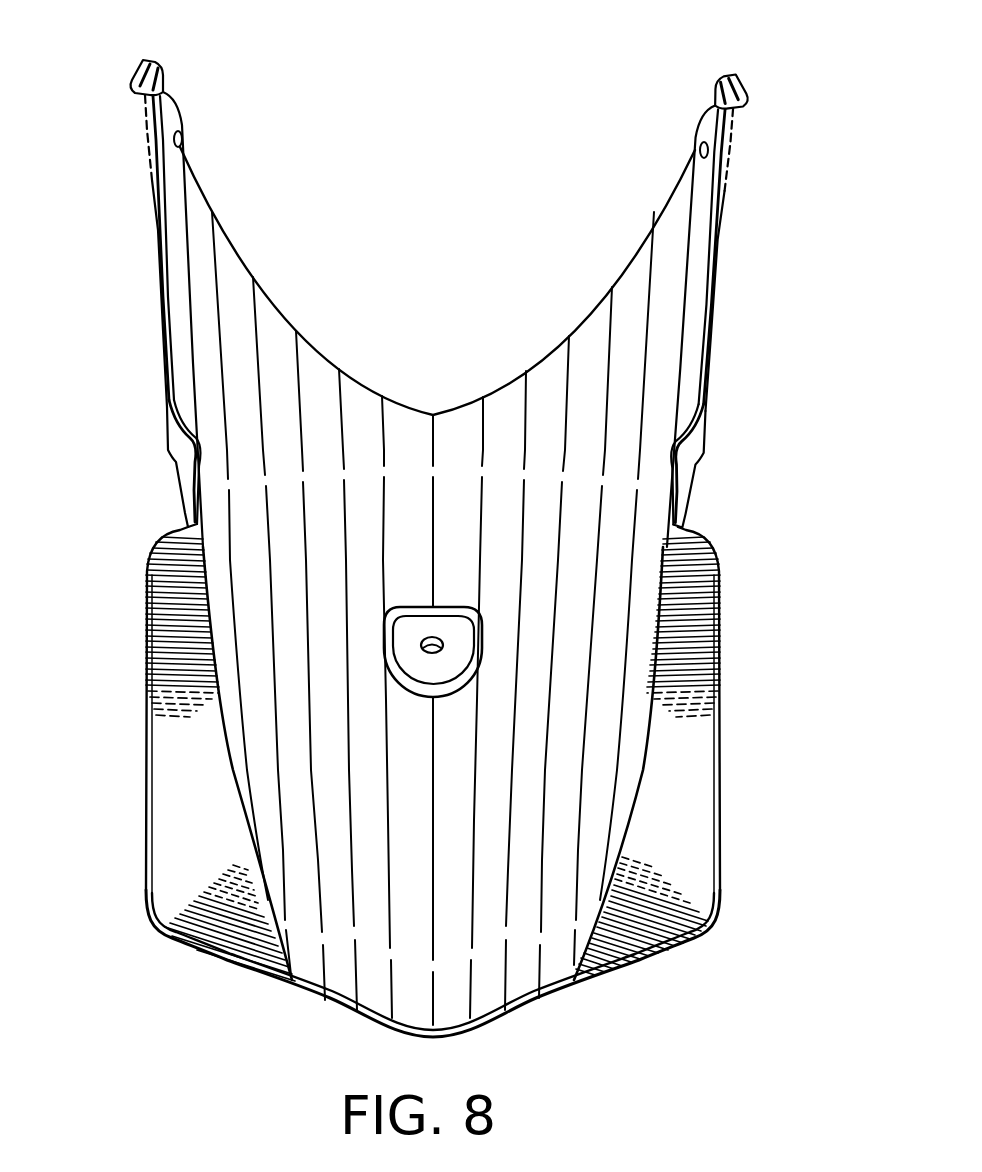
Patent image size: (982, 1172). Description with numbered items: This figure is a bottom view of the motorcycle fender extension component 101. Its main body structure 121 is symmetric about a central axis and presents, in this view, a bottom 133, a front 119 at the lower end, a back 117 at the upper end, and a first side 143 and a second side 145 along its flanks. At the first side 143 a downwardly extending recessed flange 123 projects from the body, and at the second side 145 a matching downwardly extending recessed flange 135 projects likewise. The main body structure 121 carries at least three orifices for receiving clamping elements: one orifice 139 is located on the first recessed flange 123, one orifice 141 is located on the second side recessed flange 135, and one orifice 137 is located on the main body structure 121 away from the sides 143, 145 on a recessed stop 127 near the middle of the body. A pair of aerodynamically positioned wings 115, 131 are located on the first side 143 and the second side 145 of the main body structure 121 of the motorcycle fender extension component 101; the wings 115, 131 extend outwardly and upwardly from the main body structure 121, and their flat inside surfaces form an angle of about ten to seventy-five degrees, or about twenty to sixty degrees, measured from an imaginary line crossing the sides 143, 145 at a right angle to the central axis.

The motorcycle fender extension component 101 is at (770, 330).
The wing 115 is at (169, 782).
The back 117 is at (477, 397).
The front 119 is at (370, 1022).
The main body structure 121 is at (315, 357).
The recessed flange 123 is at (177, 252).
The recessed stop 127 is at (400, 642).
The wing 131 is at (690, 724).
The bottom 133 is at (407, 873).
The recessed flange 135 is at (697, 240).
The orifice 137 is at (438, 652).
The orifice 139 is at (238, 105).
The orifice 141 is at (697, 150).
The first side 143 is at (182, 528).
The second side 145 is at (682, 533).